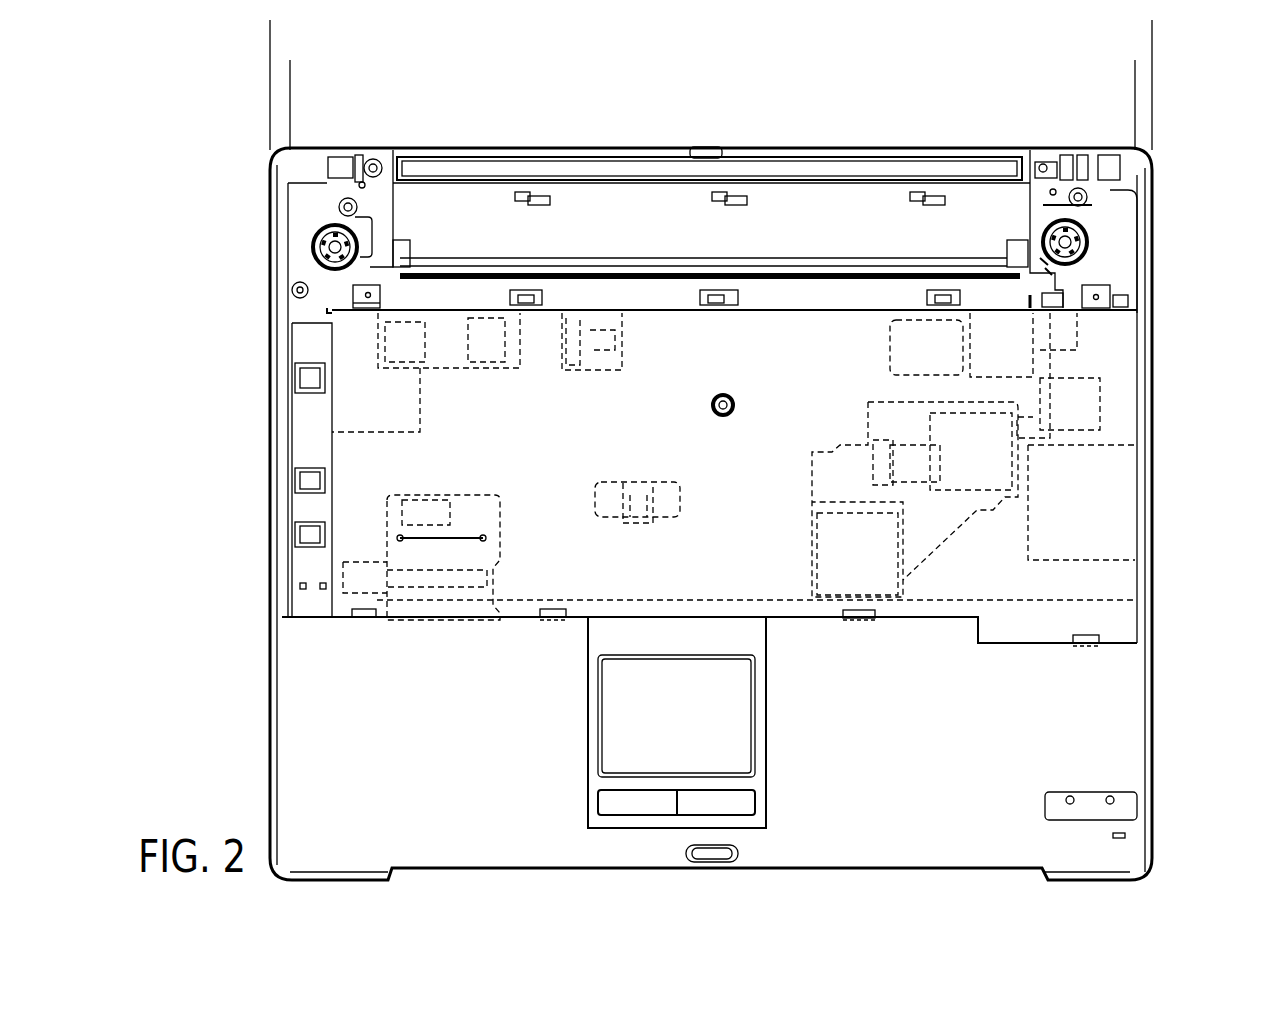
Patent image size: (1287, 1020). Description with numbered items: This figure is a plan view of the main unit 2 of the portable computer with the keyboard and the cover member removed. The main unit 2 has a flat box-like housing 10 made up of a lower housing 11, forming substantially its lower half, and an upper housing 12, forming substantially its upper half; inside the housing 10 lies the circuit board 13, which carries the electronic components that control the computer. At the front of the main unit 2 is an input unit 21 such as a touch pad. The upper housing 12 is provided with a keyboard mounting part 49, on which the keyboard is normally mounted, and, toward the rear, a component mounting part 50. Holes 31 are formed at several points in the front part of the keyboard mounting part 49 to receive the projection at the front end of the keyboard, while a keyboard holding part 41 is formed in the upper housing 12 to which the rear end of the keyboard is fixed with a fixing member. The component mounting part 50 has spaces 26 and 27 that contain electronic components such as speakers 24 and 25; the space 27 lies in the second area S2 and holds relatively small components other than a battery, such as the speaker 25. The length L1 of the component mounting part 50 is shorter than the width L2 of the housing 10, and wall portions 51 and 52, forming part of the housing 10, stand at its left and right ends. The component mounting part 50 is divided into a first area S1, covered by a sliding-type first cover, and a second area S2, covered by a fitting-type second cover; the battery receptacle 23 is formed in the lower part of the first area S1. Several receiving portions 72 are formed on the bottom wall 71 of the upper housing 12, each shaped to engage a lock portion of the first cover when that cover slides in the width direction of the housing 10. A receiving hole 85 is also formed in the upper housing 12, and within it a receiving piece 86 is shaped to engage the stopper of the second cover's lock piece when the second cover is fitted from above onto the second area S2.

The main unit 2 is at (252, 238).
The housing 10 is at (1165, 427).
The lower housing 11 is at (1160, 578).
The upper housing 12 is at (1165, 531).
The circuit board 13 is at (1005, 468).
The input unit 21 is at (735, 712).
The battery receptacle 23 is at (625, 168).
The speaker 24 is at (313, 258).
The speaker 25 is at (1088, 240).
The space 26 is at (322, 192).
The space 27 is at (1120, 218).
The hole 31 is at (363, 608).
The keyboard holding part 41 is at (362, 309).
The keyboard mounting part 49 is at (732, 454).
The component mounting part 50 is at (803, 208).
The wall portion 51 is at (292, 185).
The wall portion 52 is at (1137, 165).
The bottom wall 71 is at (873, 230).
The receiving portion 72 is at (523, 192).
The receiving hole 85 is at (1050, 200).
The receiving piece 86 is at (1110, 190).
The first area S1 is at (628, 218).
The second area S2 is at (1107, 185).
The length of the component mounting part L1 is at (298, 73).
The width of the housing L2 is at (278, 35).